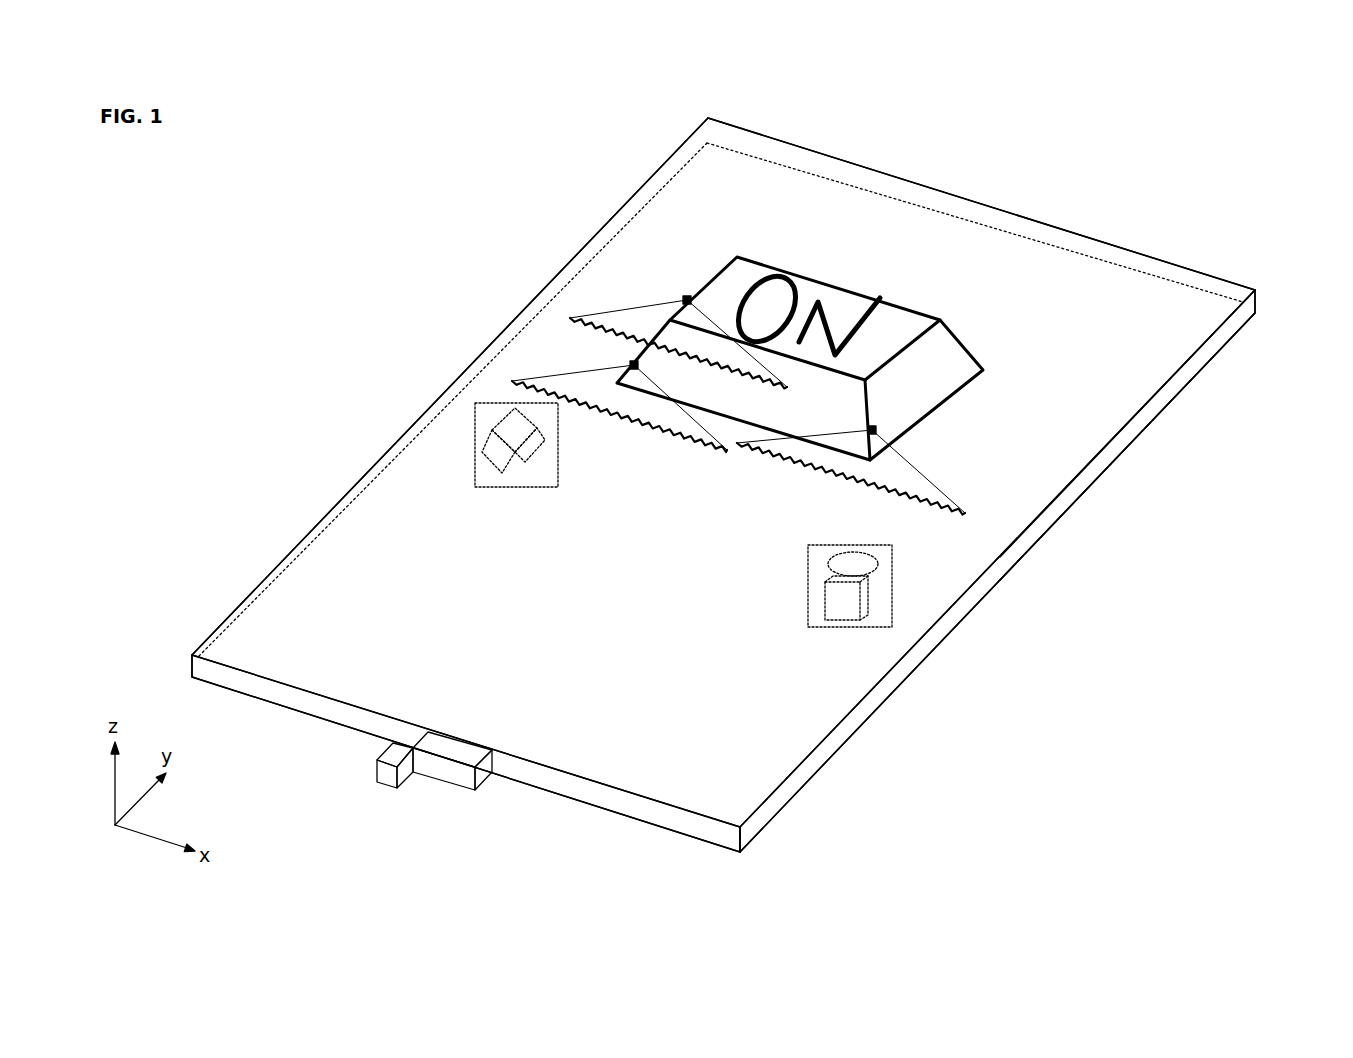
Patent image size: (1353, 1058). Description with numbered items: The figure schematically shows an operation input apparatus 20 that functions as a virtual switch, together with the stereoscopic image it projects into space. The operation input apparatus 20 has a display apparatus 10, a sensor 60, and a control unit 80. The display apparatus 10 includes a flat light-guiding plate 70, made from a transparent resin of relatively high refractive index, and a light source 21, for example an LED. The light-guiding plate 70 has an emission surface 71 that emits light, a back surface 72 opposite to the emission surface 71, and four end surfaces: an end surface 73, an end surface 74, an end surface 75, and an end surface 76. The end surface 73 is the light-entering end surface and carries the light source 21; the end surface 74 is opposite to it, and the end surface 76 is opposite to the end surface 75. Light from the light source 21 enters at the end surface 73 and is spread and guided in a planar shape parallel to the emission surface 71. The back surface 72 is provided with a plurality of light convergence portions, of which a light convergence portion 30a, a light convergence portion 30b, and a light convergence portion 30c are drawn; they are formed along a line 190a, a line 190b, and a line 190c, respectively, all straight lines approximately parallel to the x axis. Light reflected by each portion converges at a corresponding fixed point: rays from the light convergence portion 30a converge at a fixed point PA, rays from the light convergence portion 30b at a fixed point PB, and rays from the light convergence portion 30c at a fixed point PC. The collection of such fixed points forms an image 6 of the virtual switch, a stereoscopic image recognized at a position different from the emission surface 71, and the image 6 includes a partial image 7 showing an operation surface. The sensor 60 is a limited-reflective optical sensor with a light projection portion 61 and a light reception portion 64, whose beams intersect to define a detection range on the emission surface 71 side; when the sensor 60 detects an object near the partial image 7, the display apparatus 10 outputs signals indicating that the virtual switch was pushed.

The display apparatus 10 is at (728, 477).
The operation input apparatus 20 is at (1305, 100).
The image 6 is at (817, 357).
The partial image 7 is at (870, 292).
The light-guiding plate 70 is at (1187, 268).
The emission surface 71 is at (1173, 365).
The back surface 72 is at (1093, 482).
The end surface 73 is at (343, 717).
The end surface 74 is at (823, 153).
The end surface 75 is at (230, 610).
The end surface 76 is at (862, 718).
The sensor 60 is at (683, 522).
The light projection portion 61 is at (535, 492).
The light reception portion 64 is at (816, 588).
The light convergence portion 30a is at (612, 343).
The light convergence portion 30b is at (663, 450).
The light convergence portion 30c is at (838, 481).
The line 190a is at (570, 318).
The line 190b is at (512, 381).
The line 190c is at (967, 514).
The light source 21 is at (460, 785).
The control unit 80 is at (373, 770).
The fixed point PA is at (687, 300).
The fixed point PB is at (634, 365).
The fixed point PC is at (872, 430).